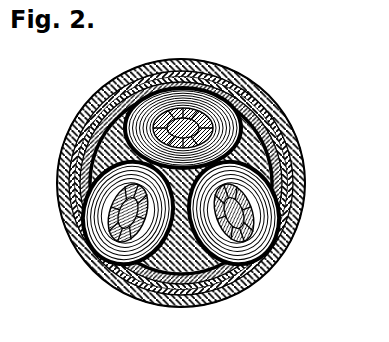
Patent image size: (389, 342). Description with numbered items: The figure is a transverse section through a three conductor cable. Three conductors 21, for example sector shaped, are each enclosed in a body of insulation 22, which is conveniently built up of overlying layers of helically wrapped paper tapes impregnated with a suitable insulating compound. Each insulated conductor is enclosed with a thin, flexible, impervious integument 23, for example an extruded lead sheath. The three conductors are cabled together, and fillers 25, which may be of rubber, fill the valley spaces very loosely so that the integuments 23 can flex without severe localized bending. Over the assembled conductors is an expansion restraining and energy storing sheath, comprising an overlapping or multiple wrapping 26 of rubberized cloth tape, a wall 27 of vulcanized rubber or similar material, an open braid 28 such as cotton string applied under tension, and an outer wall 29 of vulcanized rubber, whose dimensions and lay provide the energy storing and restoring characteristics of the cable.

The conductor 21 is at (100, 253).
The body of insulation 22 is at (58, 203).
The integument 23 is at (73, 154).
The filler 25 is at (170, 304).
The multiple wrapping 26 is at (208, 305).
The wall 27 is at (303, 205).
The open braid 28 is at (297, 174).
The outer wall 29 is at (291, 126).